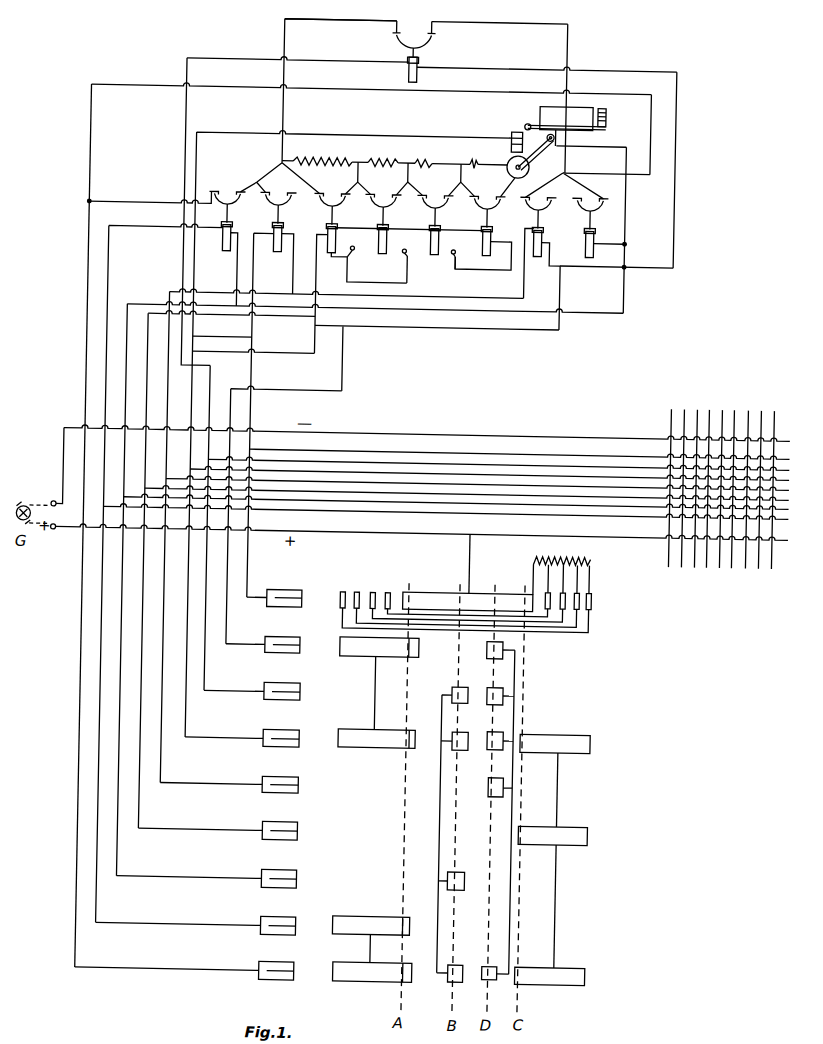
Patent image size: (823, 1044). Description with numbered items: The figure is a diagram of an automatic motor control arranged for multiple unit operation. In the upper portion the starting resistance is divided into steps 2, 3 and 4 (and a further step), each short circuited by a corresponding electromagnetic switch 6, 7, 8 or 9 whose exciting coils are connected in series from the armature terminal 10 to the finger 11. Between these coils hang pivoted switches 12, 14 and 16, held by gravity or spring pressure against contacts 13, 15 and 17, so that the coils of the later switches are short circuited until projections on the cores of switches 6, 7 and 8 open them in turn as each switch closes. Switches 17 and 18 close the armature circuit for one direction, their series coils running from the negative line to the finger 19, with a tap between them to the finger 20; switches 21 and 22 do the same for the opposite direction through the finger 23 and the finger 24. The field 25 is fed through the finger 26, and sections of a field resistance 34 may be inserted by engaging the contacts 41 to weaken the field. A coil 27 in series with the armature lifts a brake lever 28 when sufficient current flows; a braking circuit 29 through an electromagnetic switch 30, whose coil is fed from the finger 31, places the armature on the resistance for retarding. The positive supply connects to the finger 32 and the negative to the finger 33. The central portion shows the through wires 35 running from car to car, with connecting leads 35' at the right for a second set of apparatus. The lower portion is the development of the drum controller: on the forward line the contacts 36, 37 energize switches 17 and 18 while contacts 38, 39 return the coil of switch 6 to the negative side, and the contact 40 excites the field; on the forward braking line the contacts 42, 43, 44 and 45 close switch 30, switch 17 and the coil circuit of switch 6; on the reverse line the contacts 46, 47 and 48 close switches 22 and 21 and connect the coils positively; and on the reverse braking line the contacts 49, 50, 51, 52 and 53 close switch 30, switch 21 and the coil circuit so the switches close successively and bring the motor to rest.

The first step of starting resistance 2 is at (323, 151).
The second step of starting resistance 3 is at (383, 152).
The third step of starting resistance 4 is at (424, 153).
The electromagnetic switch 6 is at (331, 217).
The electromagnetic switch 7 is at (382, 217).
The electromagnetic switch 8 is at (434, 217).
The electromagnetic switch 9 is at (486, 217).
The armature terminal 10 is at (524, 167).
The finger 11 is at (277, 749).
The pivoted switch 12 is at (347, 243).
The contact 13 is at (344, 260).
The pivoted switch 14 is at (416, 243).
The contact 15 is at (400, 256).
The pivoted switch 16 is at (453, 253).
The electromagnetic switch 17 is at (589, 217).
The electromagnetic switch 18 is at (226, 217).
The finger 19 is at (276, 937).
The finger 20 is at (277, 890).
The electromagnetic switch 21 is at (537, 217).
The electromagnetic switch 22 is at (277, 217).
The finger 23 is at (270, 843).
The finger 24 is at (276, 795).
The field 25 is at (506, 133).
The finger 26 is at (273, 611).
The coil 27 is at (600, 113).
The brake lever 28 is at (574, 209).
The braking circuit 29 is at (337, 26).
The electromagnetic switch 30 is at (411, 67).
The contact finger 31 is at (270, 703).
The contact finger 32 is at (273, 982).
The finger 33 is at (271, 657).
The field resistance 34 is at (533, 560).
The through wires 35 is at (423, 472).
The connecting leads 35' is at (718, 476).
The drum contact 36 is at (358, 982).
The drum contact 37 is at (371, 939).
The drum contact 38 is at (377, 702).
The drum contact 39 is at (358, 657).
The drum contact 40 is at (468, 602).
The drum contacts 41 is at (364, 590).
The drum contact 42 is at (455, 981).
The drum contact 43 is at (457, 690).
The drum contact 44 is at (473, 880).
The drum contact 45 is at (466, 749).
The drum contact 46 is at (566, 982).
The drum contact 47 is at (572, 843).
The drum contact 48 is at (574, 750).
The drum contact 49 is at (492, 979).
The drum contact 50 is at (493, 703).
The drum contact 51 is at (484, 162).
The drum contact 52 is at (491, 656).
The drum contact 53 is at (494, 748).